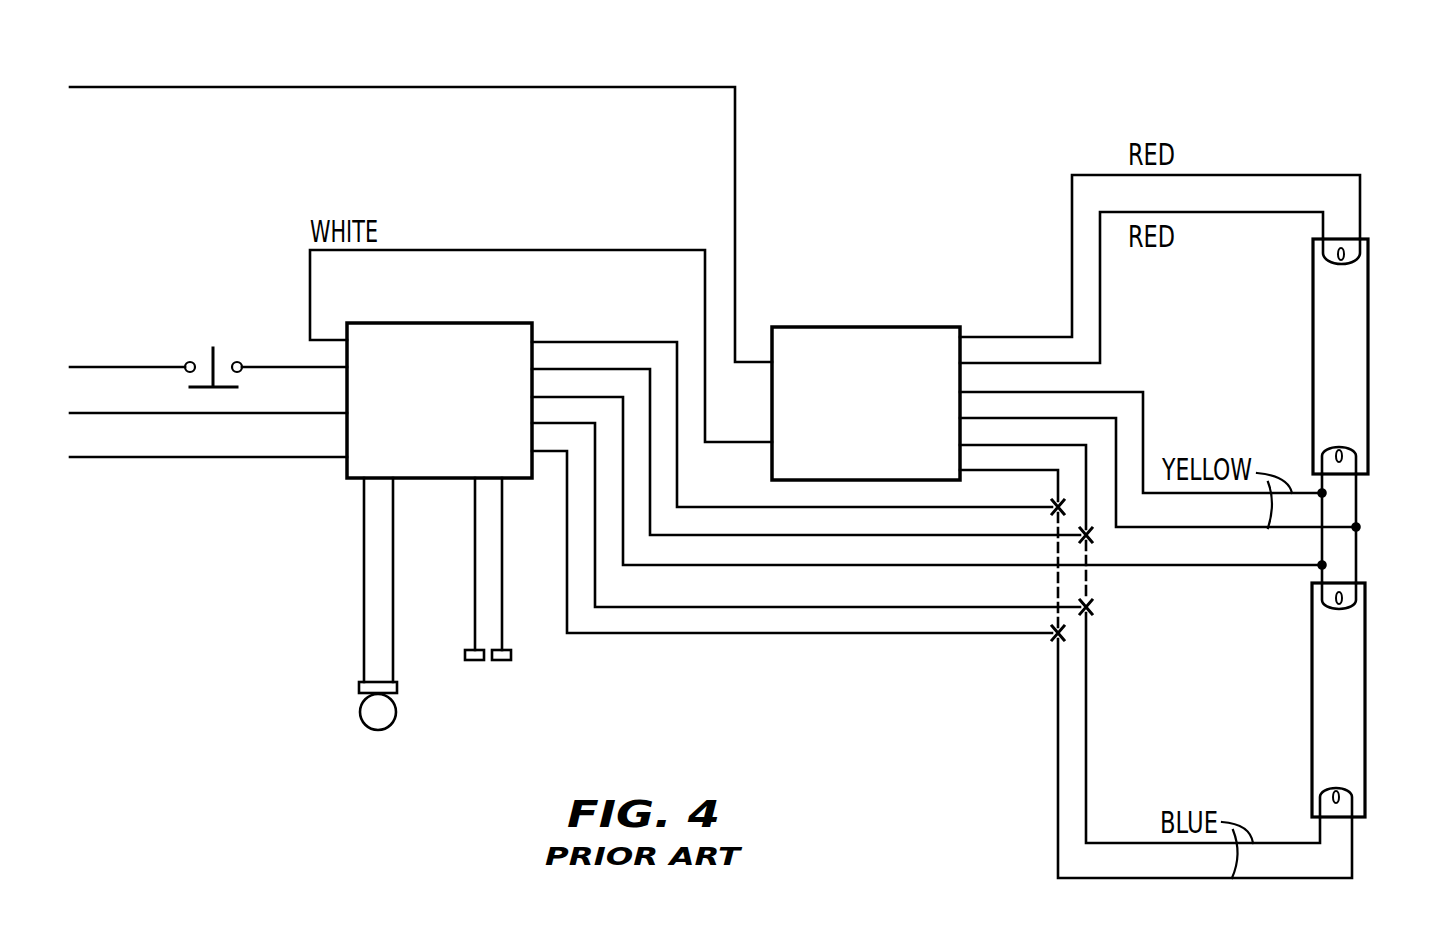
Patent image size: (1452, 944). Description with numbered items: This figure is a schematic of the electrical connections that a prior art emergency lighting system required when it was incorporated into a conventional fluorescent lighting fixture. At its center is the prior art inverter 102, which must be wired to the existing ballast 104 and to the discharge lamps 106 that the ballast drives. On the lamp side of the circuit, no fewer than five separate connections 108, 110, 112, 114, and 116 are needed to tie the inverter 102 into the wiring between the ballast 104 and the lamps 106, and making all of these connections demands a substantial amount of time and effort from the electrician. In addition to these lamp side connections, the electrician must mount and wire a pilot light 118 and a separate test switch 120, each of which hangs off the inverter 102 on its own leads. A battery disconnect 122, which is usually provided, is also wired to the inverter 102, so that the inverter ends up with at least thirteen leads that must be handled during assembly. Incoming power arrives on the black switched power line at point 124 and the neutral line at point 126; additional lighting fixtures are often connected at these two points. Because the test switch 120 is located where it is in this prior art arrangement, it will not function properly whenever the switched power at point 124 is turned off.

The inverter 102 is at (450, 336).
The ballast 104 is at (843, 327).
The discharge lamps 106 is at (1343, 373).
The lamp side connection 108 is at (1052, 505).
The lamp side connection 110 is at (1092, 540).
The lamp side connection 112 is at (1092, 611).
The lamp side connection 114 is at (1052, 640).
The lamp side connection 116 is at (1316, 567).
The pilot light 118 is at (387, 722).
The test switch 120 is at (221, 360).
The battery disconnect 122 is at (498, 660).
The switched power point 124 is at (123, 87).
The neutral point 126 is at (140, 367).